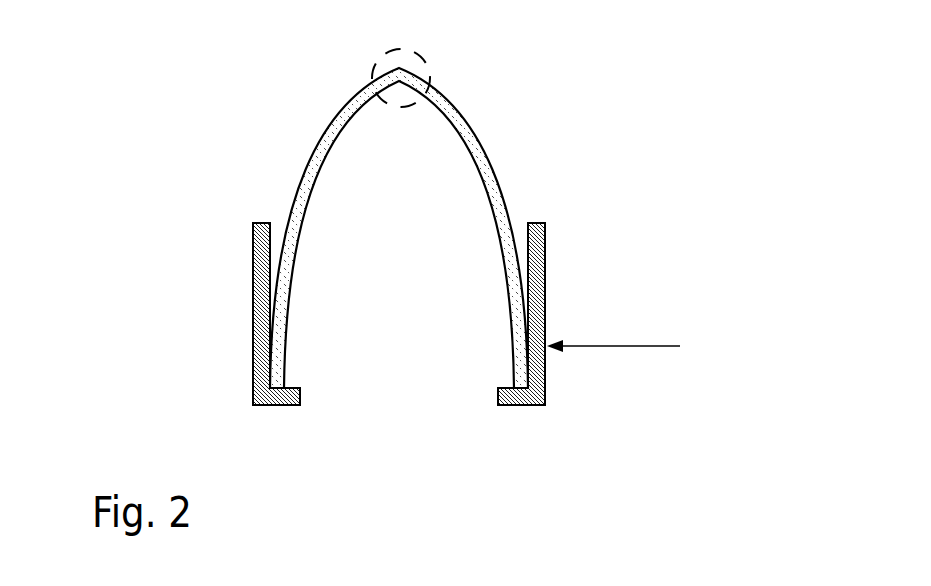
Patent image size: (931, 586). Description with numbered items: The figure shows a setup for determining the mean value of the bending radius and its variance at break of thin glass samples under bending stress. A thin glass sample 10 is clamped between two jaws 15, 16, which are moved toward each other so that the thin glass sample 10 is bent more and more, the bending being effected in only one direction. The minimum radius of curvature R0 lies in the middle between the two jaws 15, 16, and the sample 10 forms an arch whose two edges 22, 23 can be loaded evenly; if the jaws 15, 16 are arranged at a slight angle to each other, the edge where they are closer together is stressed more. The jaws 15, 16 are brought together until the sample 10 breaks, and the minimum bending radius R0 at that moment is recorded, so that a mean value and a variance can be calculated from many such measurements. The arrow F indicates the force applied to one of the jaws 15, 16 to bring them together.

The thin glass sample 10 is at (400, 202).
The edge of sample 22 is at (313, 140).
The edge of sample 23 is at (330, 113).
The minimum radius of curvature R0 is at (437, 68).
The jaw 15 is at (250, 307).
The jaw 16 is at (547, 303).
The applied force F is at (628, 346).